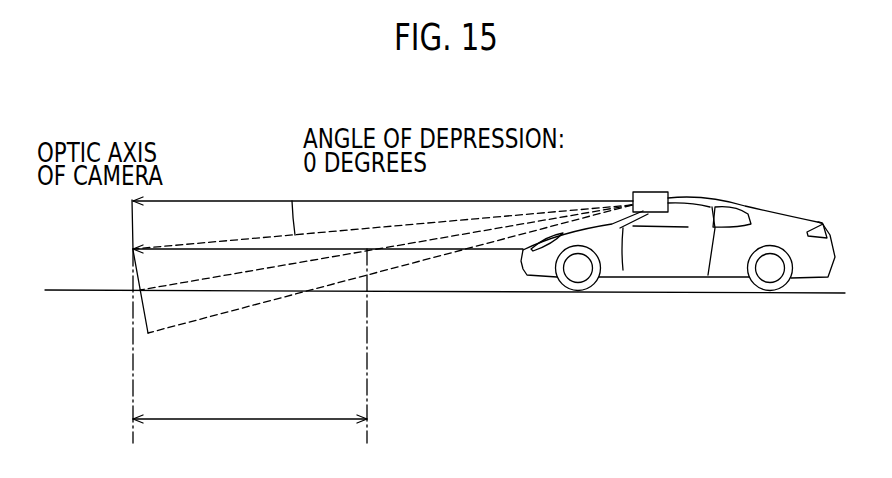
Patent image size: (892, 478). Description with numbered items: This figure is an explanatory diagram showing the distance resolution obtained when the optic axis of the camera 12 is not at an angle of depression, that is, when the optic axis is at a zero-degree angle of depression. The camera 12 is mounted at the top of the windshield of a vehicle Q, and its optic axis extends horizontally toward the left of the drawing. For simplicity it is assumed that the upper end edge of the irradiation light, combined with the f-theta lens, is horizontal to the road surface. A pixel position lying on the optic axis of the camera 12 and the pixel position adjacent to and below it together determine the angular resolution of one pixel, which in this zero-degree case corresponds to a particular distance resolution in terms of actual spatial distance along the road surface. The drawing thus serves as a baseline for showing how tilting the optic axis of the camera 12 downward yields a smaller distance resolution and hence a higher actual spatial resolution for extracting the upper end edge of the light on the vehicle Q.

The camera 12 is at (657, 192).
The vehicle Q is at (792, 227).